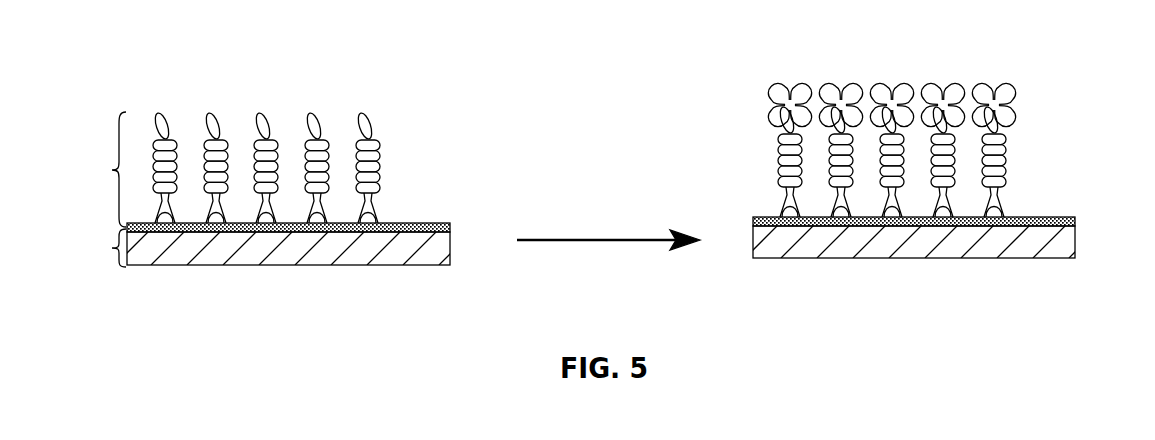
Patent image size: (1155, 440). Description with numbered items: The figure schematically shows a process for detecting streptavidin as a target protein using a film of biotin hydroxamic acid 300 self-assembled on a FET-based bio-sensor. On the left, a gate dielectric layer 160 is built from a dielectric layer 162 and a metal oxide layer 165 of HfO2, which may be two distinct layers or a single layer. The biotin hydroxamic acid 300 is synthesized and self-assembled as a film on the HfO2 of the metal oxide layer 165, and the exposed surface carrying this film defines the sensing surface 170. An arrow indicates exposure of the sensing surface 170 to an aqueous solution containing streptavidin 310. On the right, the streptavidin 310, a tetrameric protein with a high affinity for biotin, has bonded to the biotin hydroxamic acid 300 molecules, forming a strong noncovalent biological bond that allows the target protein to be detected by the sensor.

The biotin hydroxamic acid 300 is at (253, 150).
The streptavidin 310 is at (975, 85).
The metal oxide layer 165 is at (413, 222).
The dielectric layer 162 is at (203, 267).
The gate dielectric layer 160 is at (95, 248).
The sensing surface 170 is at (95, 169).